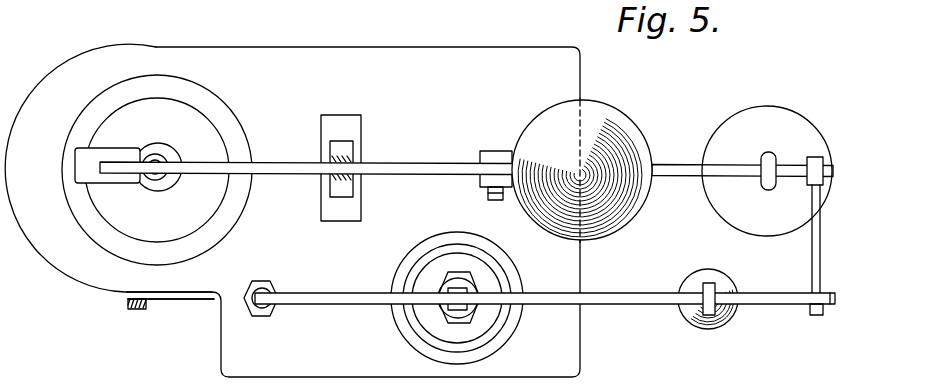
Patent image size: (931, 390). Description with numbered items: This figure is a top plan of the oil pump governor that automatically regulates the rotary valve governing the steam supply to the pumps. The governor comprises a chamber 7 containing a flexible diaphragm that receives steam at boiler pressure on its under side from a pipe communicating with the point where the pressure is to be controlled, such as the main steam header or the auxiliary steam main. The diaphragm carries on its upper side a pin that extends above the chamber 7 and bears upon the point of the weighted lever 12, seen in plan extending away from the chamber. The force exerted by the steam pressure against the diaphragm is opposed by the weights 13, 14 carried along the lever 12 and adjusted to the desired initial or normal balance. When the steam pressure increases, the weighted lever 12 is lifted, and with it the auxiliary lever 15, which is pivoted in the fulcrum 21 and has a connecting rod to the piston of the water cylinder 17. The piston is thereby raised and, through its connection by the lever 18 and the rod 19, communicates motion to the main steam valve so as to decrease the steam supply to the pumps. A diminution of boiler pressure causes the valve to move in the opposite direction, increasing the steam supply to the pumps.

The chamber 7 is at (192, 127).
The weighted lever 12 is at (466, 161).
The weight 13 is at (617, 117).
The weight 14 is at (793, 121).
The auxiliary lever 15 is at (630, 298).
The water cylinder 17 is at (513, 274).
The lever 18 is at (192, 300).
The rod 19 is at (127, 305).
The fulcrum 21 is at (272, 293).